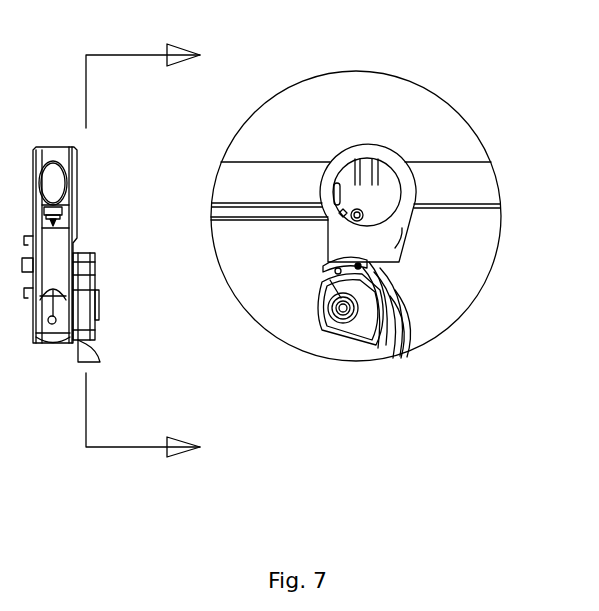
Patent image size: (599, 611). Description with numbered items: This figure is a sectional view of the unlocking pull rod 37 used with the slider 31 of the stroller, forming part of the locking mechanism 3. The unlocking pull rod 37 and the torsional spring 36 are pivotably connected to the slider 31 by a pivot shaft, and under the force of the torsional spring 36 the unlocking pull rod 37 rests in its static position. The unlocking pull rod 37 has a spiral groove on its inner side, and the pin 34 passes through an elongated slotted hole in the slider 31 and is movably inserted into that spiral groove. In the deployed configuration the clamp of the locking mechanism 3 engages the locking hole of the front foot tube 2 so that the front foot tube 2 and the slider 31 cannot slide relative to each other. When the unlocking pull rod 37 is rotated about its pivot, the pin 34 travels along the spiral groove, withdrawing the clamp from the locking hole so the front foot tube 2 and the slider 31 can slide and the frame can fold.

The front foot tube 2 is at (467, 178).
The locking mechanism 3 is at (320, 74).
The slider 31 is at (370, 147).
The pin 34 is at (373, 262).
The torsional spring 36 is at (320, 315).
The unlocking pull rod 37 is at (408, 332).